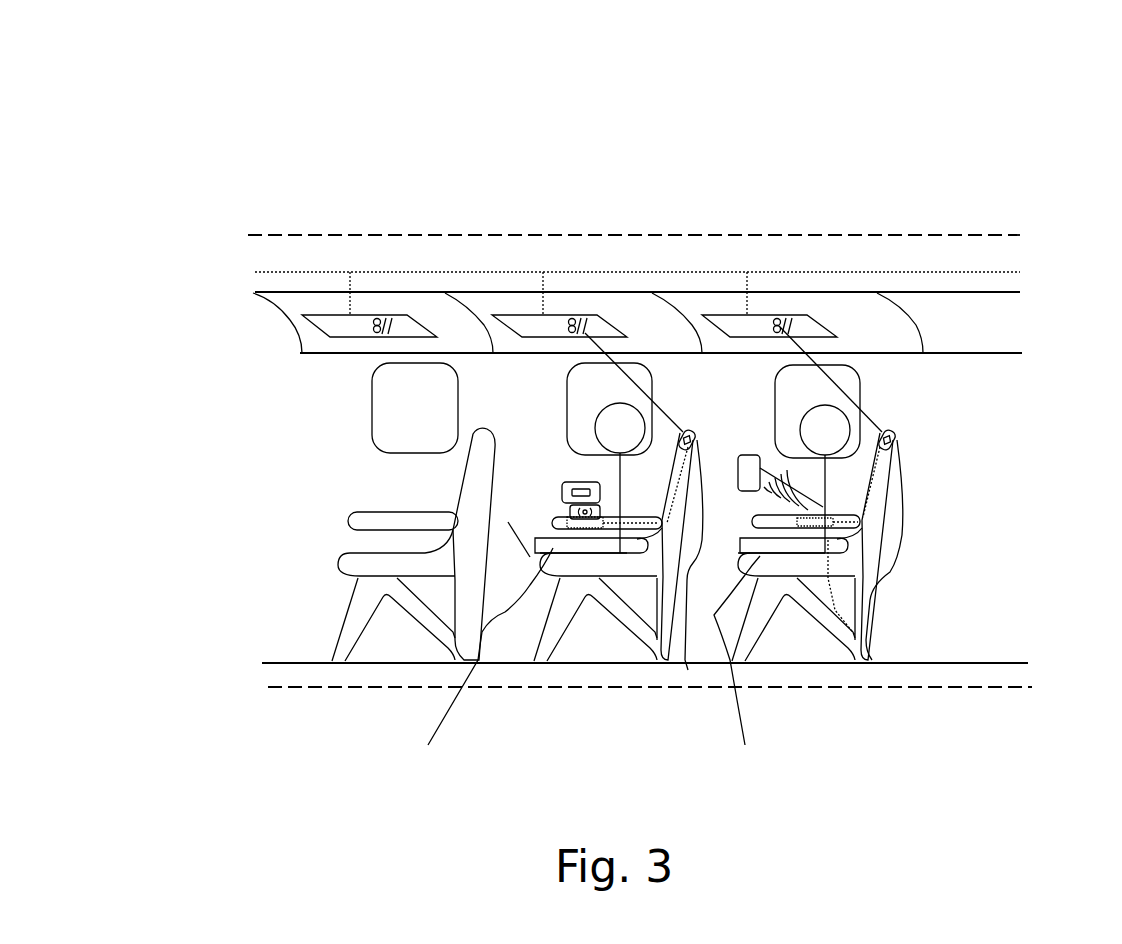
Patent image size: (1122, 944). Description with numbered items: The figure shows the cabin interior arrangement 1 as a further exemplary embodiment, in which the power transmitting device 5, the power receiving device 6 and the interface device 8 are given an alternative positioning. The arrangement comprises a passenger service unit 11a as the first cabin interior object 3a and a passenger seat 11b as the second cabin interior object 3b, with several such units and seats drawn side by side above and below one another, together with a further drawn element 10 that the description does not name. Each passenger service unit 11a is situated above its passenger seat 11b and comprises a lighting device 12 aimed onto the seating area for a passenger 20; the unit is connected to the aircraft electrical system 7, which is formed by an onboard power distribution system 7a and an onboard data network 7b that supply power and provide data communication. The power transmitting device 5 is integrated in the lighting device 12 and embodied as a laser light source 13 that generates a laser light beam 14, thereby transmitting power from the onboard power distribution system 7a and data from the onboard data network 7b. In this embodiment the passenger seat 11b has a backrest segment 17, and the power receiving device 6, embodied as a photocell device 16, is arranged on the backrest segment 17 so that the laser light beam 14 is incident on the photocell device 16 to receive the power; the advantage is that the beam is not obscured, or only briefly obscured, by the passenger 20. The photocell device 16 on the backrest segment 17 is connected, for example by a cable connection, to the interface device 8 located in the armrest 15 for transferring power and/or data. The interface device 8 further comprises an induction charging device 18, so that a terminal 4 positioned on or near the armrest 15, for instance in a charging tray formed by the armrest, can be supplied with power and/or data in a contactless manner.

The cabin interior arrangement 1 is at (162, 112).
The first cabin interior object 3a is at (569, 248).
The second cabin interior object 3b is at (699, 670).
The terminal 4 is at (560, 483).
The power transmitting device 5 is at (628, 272).
The power receiving device 6 is at (876, 305).
The aircraft electrical system 7 is at (637, 256).
The onboard power distribution system 7a is at (637, 256).
The onboard data network 7b is at (383, 275).
The interface device 8 is at (637, 630).
The cabin wall panel 10 is at (646, 308).
The passenger service unit 11a is at (525, 327).
The passenger seat 11b is at (577, 567).
The lighting device 12 is at (628, 272).
The laser light source 13 is at (585, 333).
The laser light beam 14 is at (632, 362).
The armrest 15 is at (562, 532).
The photocell device 16 is at (688, 428).
The backrest segment 17 is at (688, 670).
The induction charging device 18 is at (567, 510).
The passenger 20 is at (587, 649).